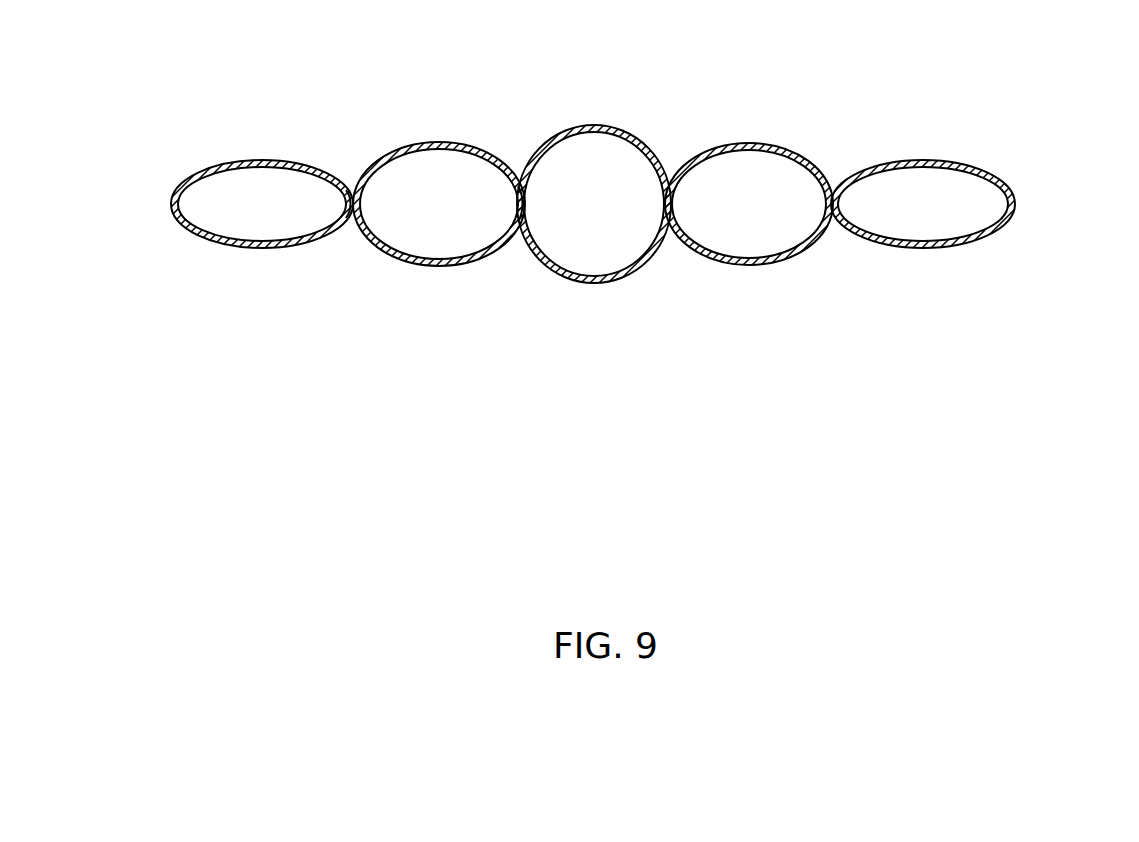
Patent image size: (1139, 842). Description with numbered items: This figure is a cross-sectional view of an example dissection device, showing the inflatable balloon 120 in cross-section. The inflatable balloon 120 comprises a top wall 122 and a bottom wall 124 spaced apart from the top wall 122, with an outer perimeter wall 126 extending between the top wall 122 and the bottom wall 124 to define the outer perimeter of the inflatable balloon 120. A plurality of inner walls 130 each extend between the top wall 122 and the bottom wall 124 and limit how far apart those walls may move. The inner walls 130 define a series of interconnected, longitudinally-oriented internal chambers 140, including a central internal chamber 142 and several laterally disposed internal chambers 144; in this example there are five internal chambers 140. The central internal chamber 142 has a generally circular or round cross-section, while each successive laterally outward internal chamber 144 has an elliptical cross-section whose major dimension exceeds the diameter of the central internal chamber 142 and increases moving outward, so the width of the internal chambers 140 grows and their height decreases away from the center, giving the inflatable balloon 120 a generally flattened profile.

The inflatable balloon 120 is at (998, 80).
The top wall 122 is at (590, 130).
The bottom wall 124 is at (592, 283).
The outer perimeter wall 126 is at (172, 201).
The inner walls 130 is at (378, 195).
The internal chambers 140 is at (570, 162).
The central internal chamber 142 is at (565, 255).
The laterally disposed internal chambers 144 is at (430, 242).